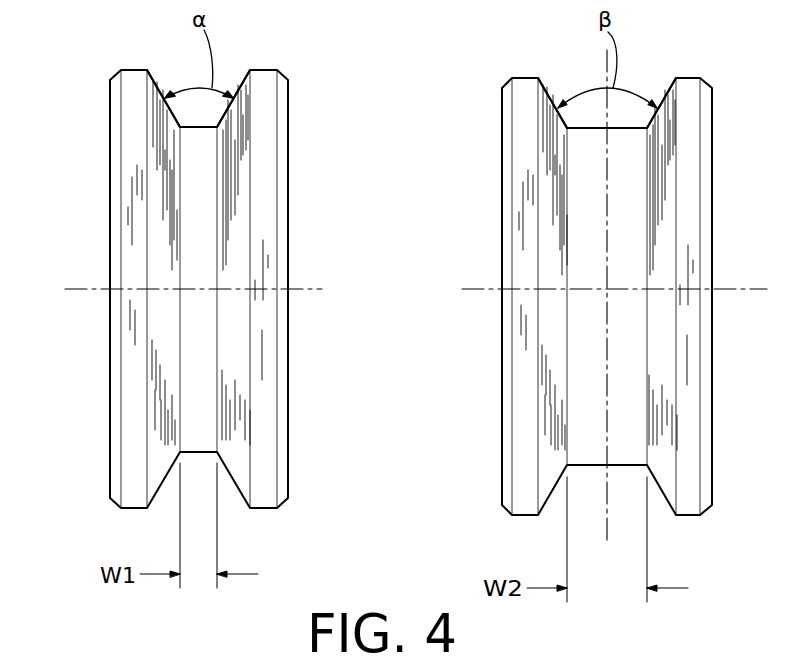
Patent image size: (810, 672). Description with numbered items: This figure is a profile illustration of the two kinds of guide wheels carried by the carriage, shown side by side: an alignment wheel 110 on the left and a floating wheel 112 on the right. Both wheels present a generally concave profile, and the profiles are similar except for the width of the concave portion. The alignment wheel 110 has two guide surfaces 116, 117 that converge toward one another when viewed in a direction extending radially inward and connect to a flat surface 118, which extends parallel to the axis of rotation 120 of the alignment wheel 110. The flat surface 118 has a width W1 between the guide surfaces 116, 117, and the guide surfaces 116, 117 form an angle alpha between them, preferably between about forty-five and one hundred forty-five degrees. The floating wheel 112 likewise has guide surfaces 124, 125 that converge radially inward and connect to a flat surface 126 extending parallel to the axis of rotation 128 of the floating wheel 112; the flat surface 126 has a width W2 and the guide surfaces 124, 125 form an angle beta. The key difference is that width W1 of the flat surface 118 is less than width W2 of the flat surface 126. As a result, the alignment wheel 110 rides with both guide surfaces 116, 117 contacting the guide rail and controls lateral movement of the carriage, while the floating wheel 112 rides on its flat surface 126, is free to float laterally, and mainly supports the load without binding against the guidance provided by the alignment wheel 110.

The alignment wheel 110 is at (132, 460).
The floating wheel 112 is at (540, 460).
The guide surface 116 is at (160, 98).
The guide surface 117 is at (230, 98).
The flat surface 118 is at (192, 198).
The axis of rotation 120 is at (320, 289).
The guide surface 124 is at (552, 106).
The guide surface 125 is at (660, 106).
The flat surface 126 is at (592, 194).
The axis of rotation 128 is at (745, 289).